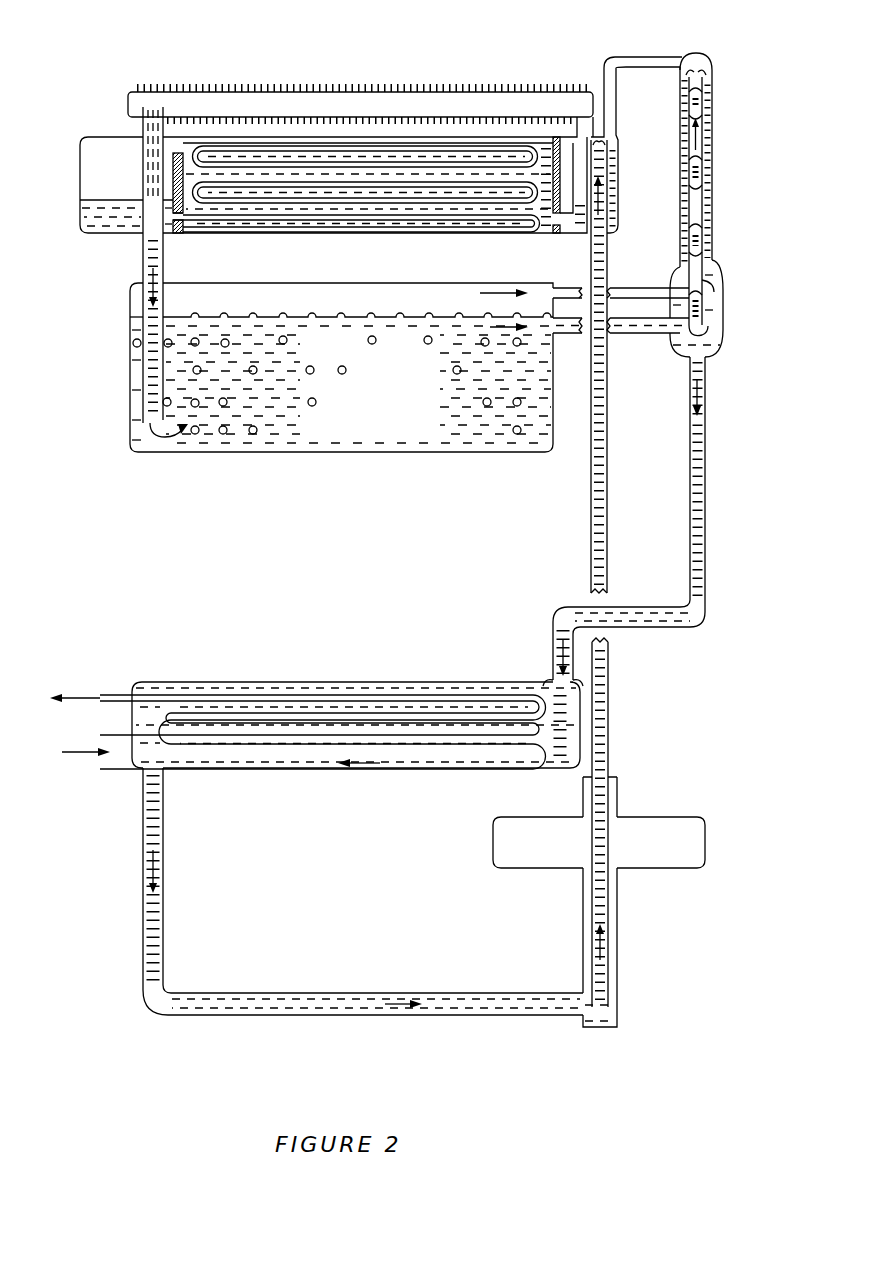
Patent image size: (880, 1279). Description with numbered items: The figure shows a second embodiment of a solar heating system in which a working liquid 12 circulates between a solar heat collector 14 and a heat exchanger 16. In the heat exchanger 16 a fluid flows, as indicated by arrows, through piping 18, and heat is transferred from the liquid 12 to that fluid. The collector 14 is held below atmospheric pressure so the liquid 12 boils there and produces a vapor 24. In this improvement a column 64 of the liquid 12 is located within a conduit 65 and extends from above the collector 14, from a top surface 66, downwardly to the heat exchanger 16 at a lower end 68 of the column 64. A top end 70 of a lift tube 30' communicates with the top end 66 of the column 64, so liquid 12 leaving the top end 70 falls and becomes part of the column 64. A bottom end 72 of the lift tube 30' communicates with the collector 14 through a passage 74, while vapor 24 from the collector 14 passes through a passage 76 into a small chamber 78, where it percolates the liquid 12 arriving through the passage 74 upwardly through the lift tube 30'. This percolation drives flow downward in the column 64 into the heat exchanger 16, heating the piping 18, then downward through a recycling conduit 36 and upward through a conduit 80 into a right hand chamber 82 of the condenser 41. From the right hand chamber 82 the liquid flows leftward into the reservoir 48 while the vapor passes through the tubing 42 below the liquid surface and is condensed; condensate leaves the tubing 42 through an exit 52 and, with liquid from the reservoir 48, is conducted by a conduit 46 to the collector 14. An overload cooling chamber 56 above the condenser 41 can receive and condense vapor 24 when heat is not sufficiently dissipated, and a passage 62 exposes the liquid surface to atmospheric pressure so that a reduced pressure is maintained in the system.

The working liquid 12 is at (372, 392).
The solar heat collector 14 is at (400, 452).
The heat exchanger 16 is at (418, 682).
The piping 18 is at (117, 695).
The vapor 24 is at (372, 300).
The lift tube 30' is at (726, 206).
The recycling conduit 36 is at (418, 993).
The condenser 41 is at (80, 168).
The condenser tubing 42 is at (467, 165).
The conduit 46 is at (143, 263).
The reservoir 48 is at (177, 152).
The exit 52 is at (178, 218).
The overload cooling chamber 56 is at (310, 100).
The passage 62 is at (632, 782).
The column of liquid 64 is at (706, 495).
The conduit 65 is at (706, 410).
The top surface 66 is at (713, 125).
The lower end 68 is at (545, 682).
The top end 70 is at (697, 62).
The bottom end 72 is at (707, 323).
The passage 74 is at (652, 333).
The passage 76 is at (631, 287).
The small chamber 78 is at (714, 285).
The conduit 80 is at (607, 498).
The right hand chamber 82 is at (622, 140).